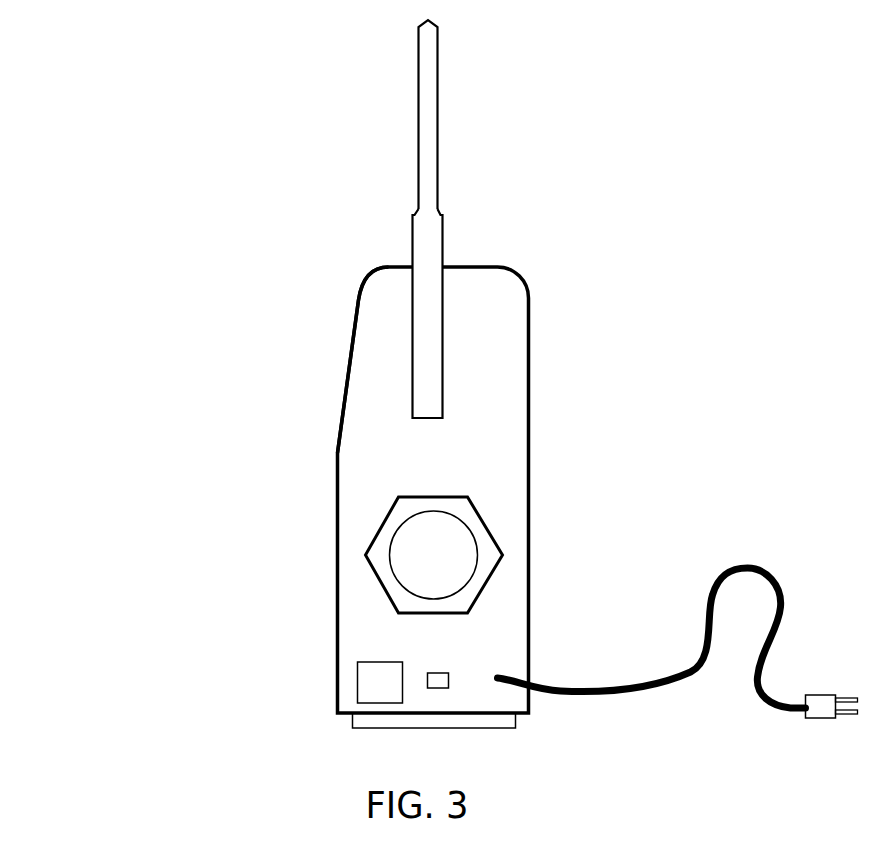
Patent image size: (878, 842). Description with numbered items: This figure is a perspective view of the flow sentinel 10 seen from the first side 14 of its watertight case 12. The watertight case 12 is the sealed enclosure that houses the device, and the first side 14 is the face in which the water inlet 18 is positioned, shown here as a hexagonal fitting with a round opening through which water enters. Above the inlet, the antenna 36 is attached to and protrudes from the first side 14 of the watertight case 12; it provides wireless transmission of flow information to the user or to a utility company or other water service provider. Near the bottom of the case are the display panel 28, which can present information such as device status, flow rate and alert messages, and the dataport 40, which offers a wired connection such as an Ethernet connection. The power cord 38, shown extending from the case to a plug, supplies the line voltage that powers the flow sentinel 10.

The flow sentinel 10 is at (497, 400).
The watertight case 12 is at (333, 497).
The first side 14 is at (525, 727).
The water inlet 18 is at (420, 523).
The display panel 28 is at (352, 350).
The antenna 36 is at (422, 234).
The power cord 38 is at (678, 607).
The dataport 40 is at (367, 683).